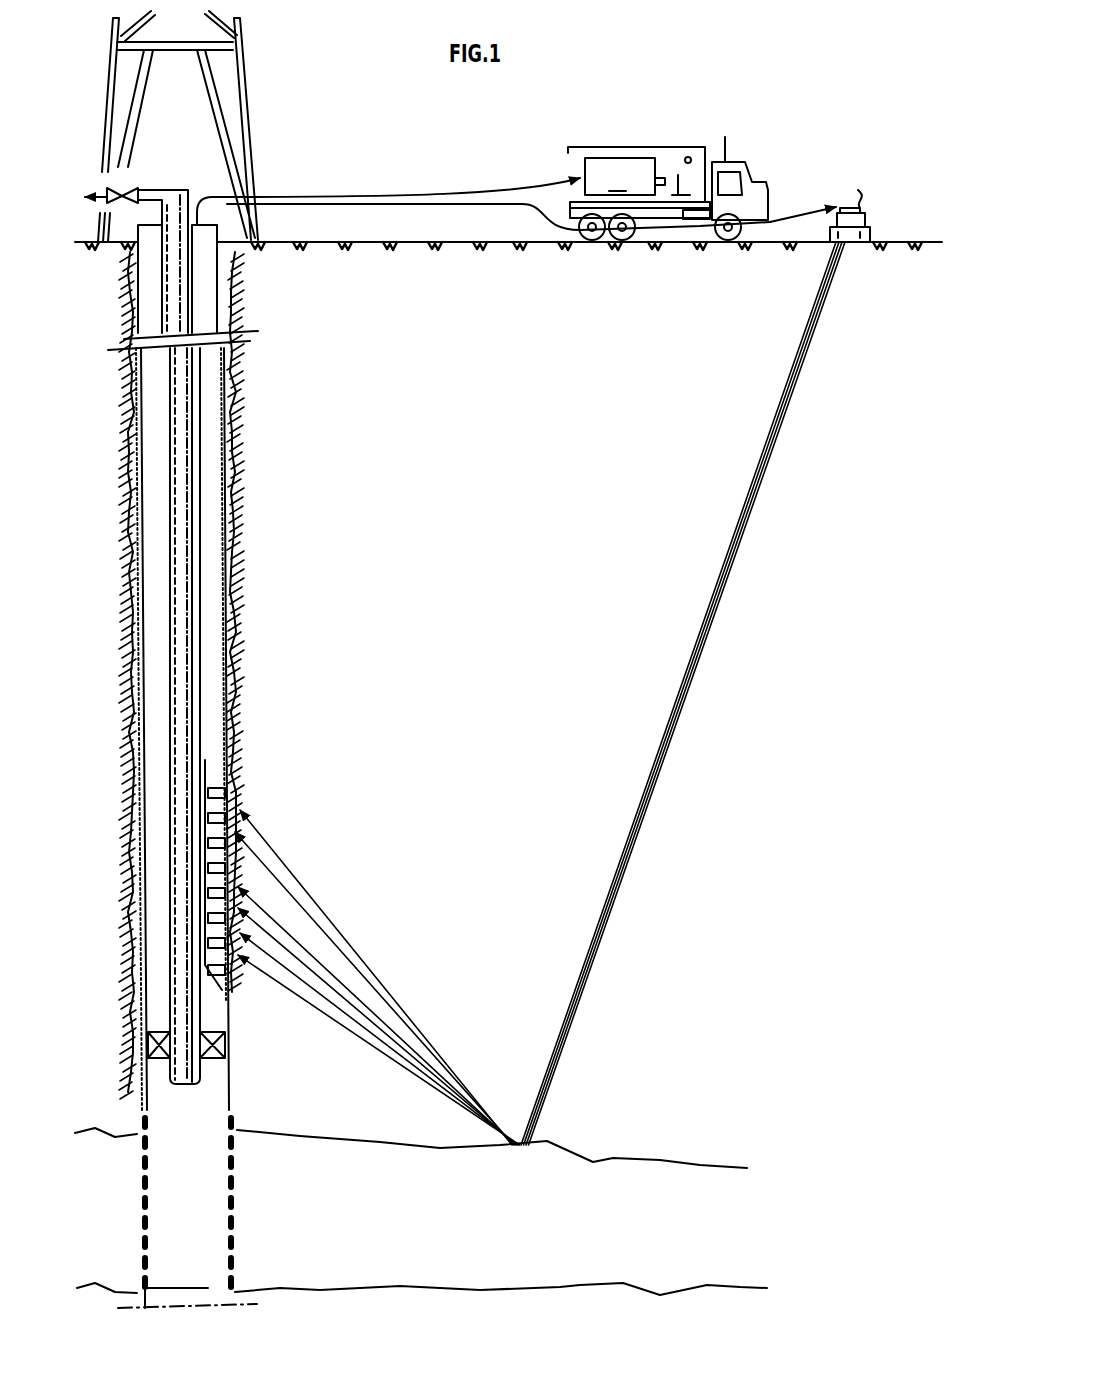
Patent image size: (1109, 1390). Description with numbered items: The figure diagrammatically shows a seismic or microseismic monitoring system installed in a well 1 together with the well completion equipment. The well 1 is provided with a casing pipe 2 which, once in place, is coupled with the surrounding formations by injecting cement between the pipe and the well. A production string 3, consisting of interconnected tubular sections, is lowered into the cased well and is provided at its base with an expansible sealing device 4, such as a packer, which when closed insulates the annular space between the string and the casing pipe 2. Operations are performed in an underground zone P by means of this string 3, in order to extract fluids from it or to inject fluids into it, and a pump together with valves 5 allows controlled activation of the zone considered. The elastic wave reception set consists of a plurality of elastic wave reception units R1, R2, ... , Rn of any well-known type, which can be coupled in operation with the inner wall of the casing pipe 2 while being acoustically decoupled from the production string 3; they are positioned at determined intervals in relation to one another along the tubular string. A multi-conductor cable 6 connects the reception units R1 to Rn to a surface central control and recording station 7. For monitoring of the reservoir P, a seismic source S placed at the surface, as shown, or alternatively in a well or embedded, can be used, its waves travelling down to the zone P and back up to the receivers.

The well 1 is at (210, 470).
The casing pipe 2 is at (214, 536).
The production string 3 is at (188, 590).
The expansible sealing device 4 is at (226, 1045).
The valves 5 is at (129, 188).
The multi-conductor cable 6 is at (205, 683).
The surface central control and recording station 7 is at (668, 188).
The elastic wave reception unit R1 is at (225, 790).
The elastic wave reception unit R2 is at (228, 822).
The elastic wave reception unit Rn is at (222, 975).
The seismic source S is at (695, 662).
The underground zone P is at (667, 1115).